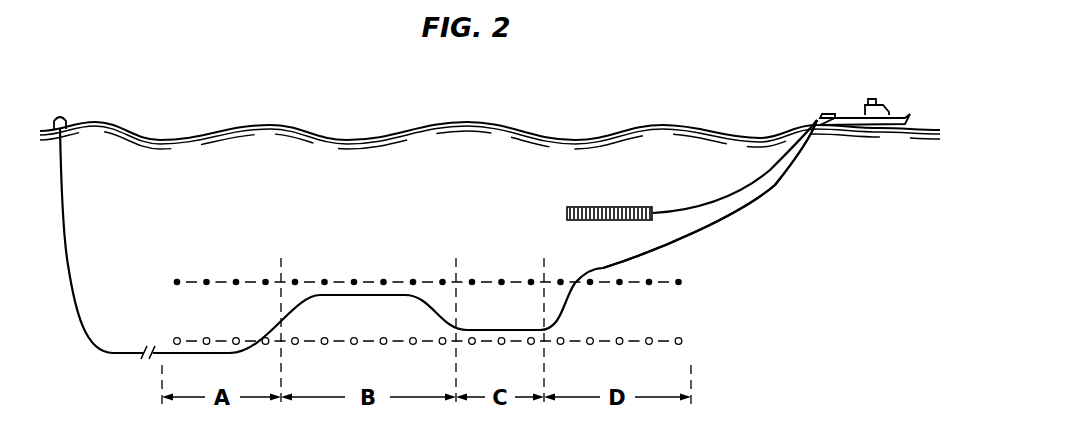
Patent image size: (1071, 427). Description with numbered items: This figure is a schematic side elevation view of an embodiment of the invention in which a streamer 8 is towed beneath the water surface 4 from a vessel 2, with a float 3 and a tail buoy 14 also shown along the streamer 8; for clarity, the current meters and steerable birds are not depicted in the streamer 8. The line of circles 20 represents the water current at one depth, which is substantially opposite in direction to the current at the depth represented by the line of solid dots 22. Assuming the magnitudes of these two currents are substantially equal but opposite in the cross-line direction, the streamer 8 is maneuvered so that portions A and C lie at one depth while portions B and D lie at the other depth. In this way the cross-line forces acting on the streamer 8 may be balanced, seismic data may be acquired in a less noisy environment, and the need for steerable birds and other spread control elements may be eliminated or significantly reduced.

The seismic vessel 2 is at (904, 114).
The float 3 is at (603, 207).
The water surface 4 is at (218, 128).
The streamer 8 is at (767, 205).
The tail buoy 14 is at (57, 117).
The line of circles 20 is at (688, 341).
The line of solid dots 22 is at (688, 282).